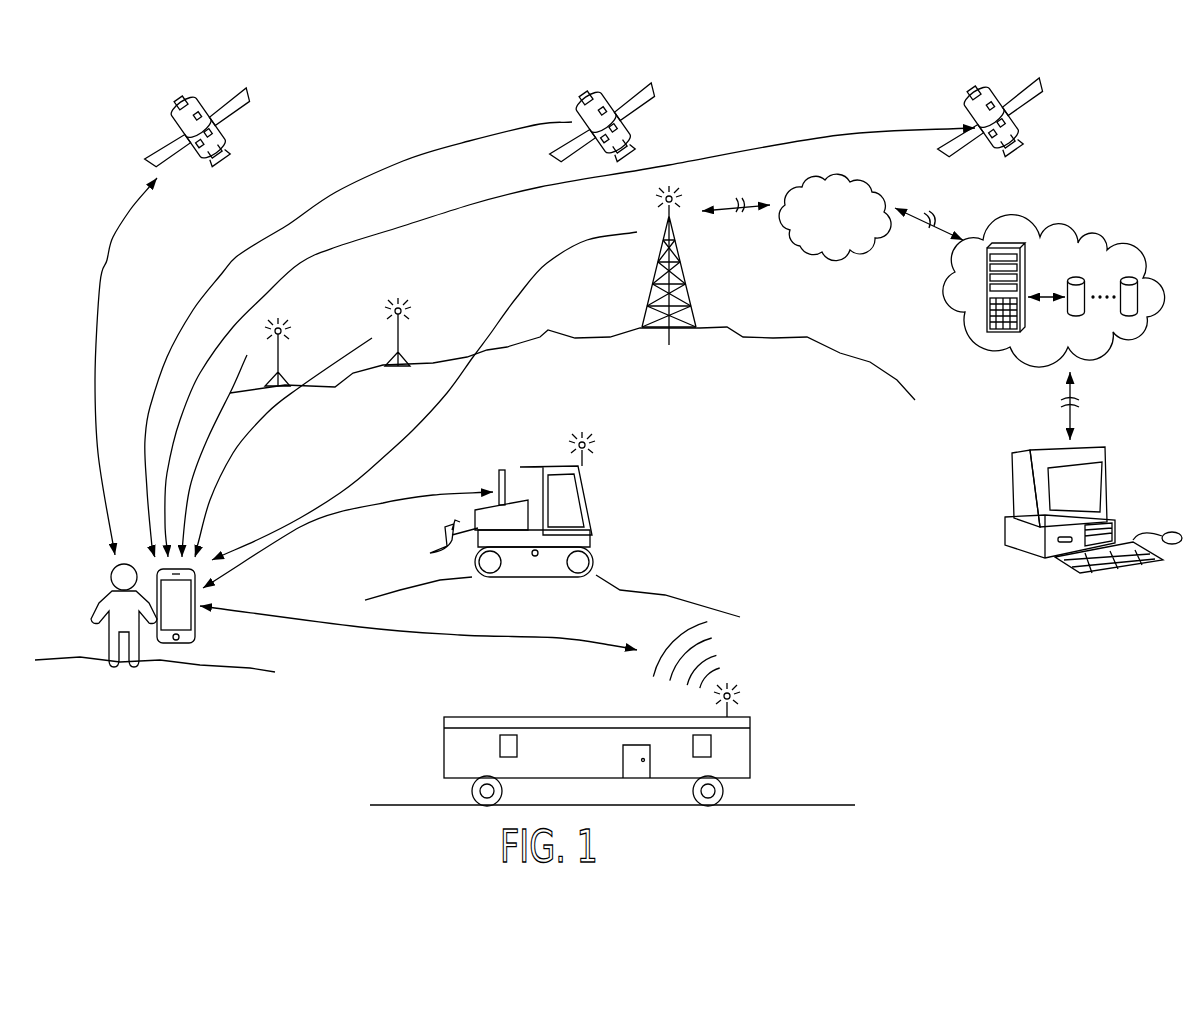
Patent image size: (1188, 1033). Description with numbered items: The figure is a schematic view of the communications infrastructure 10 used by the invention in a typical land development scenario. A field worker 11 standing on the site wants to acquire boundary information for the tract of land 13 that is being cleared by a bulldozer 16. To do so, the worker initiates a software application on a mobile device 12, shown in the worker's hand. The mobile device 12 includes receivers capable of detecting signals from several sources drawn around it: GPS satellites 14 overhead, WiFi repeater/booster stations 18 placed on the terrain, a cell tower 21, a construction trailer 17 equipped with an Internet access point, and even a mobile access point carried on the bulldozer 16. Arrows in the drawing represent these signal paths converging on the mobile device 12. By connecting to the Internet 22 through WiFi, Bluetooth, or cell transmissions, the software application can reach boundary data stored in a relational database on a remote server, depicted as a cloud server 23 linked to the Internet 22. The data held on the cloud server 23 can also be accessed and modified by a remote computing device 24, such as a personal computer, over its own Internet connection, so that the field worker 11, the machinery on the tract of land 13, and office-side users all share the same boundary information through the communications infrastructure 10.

The communications infrastructure 10 is at (80, 180).
The field worker 11 is at (102, 602).
The mobile device 12 is at (196, 620).
The tract of land 13 is at (735, 517).
The GPS satellites 14 is at (212, 110).
The bulldozer 16 is at (590, 506).
The construction trailer 17 is at (750, 727).
The WiFi repeater/booster stations 18 is at (282, 355).
The cell tower 21 is at (694, 258).
The Internet 22 is at (838, 255).
The cloud server 23 is at (1086, 224).
The remote computing device 24 is at (1012, 490).